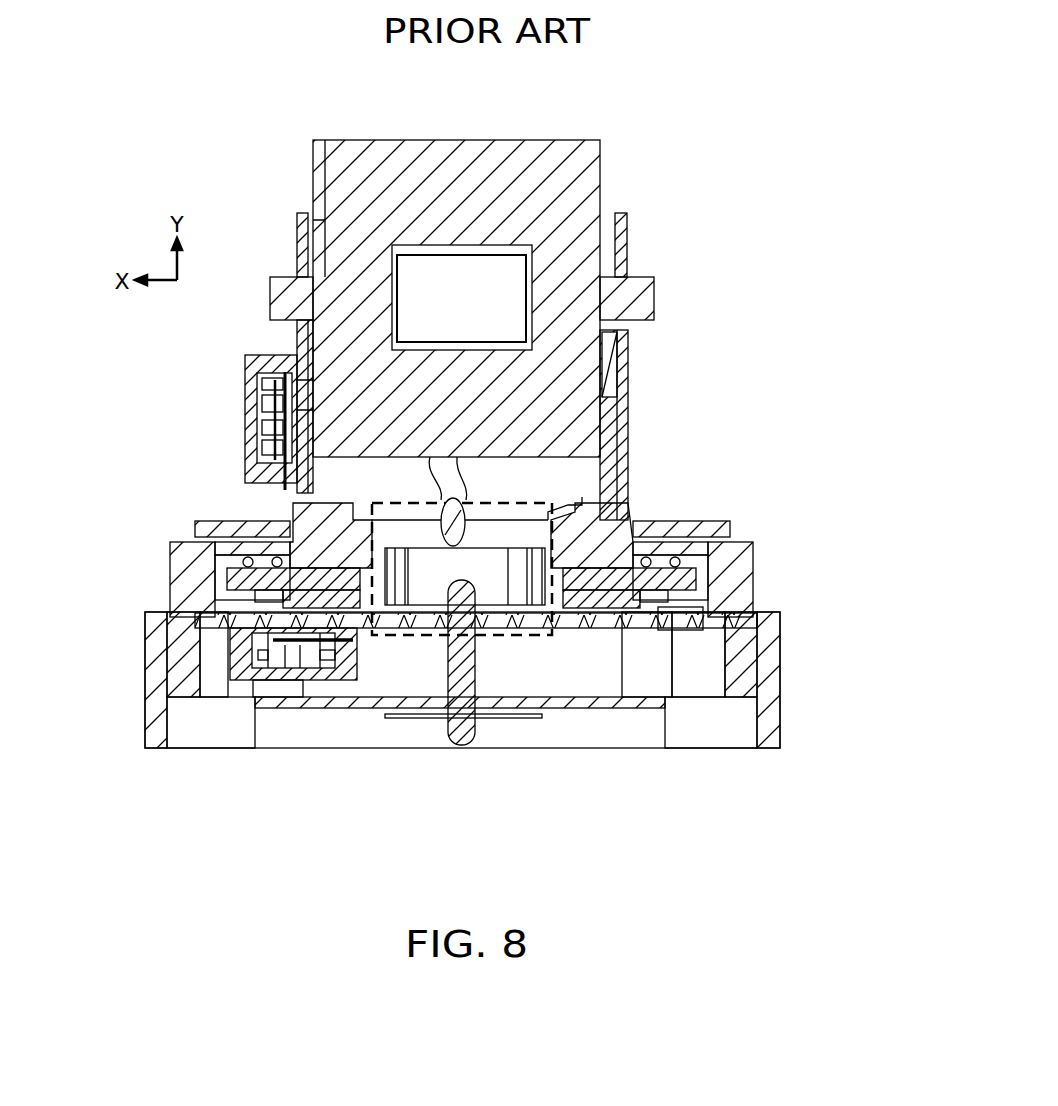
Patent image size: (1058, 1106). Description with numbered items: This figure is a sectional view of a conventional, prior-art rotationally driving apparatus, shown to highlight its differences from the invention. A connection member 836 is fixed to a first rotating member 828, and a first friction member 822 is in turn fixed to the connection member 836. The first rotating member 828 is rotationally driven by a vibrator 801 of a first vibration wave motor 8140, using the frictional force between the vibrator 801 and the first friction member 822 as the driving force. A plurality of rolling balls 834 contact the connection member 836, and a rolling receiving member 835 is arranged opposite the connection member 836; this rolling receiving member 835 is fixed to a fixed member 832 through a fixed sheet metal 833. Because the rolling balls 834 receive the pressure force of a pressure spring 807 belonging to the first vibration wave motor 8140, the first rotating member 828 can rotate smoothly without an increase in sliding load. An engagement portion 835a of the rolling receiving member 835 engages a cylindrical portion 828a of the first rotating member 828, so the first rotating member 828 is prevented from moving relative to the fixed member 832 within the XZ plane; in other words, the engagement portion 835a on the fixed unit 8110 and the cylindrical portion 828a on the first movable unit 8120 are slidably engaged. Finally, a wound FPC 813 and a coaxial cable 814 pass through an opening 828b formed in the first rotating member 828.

The vibrator 801 is at (288, 620).
The pressure spring 807 is at (290, 650).
The wound FPC 813 is at (490, 587).
The coaxial cable 814 is at (460, 698).
The first friction member 822 is at (313, 627).
The first rotating member 828 is at (288, 532).
The cylindrical portion 828a is at (635, 537).
The opening 828b is at (583, 500).
The fixed member 832 is at (160, 655).
The fixed sheet metal 833 is at (208, 625).
The rolling balls 834 is at (250, 562).
The rolling receiving member 835 is at (190, 594).
The engagement portion 835a is at (635, 538).
The connection member 836 is at (247, 582).
The fixed unit 8110 is at (501, 722).
The first movable unit 8120 is at (743, 515).
The first vibration wave motor 8140 is at (233, 685).